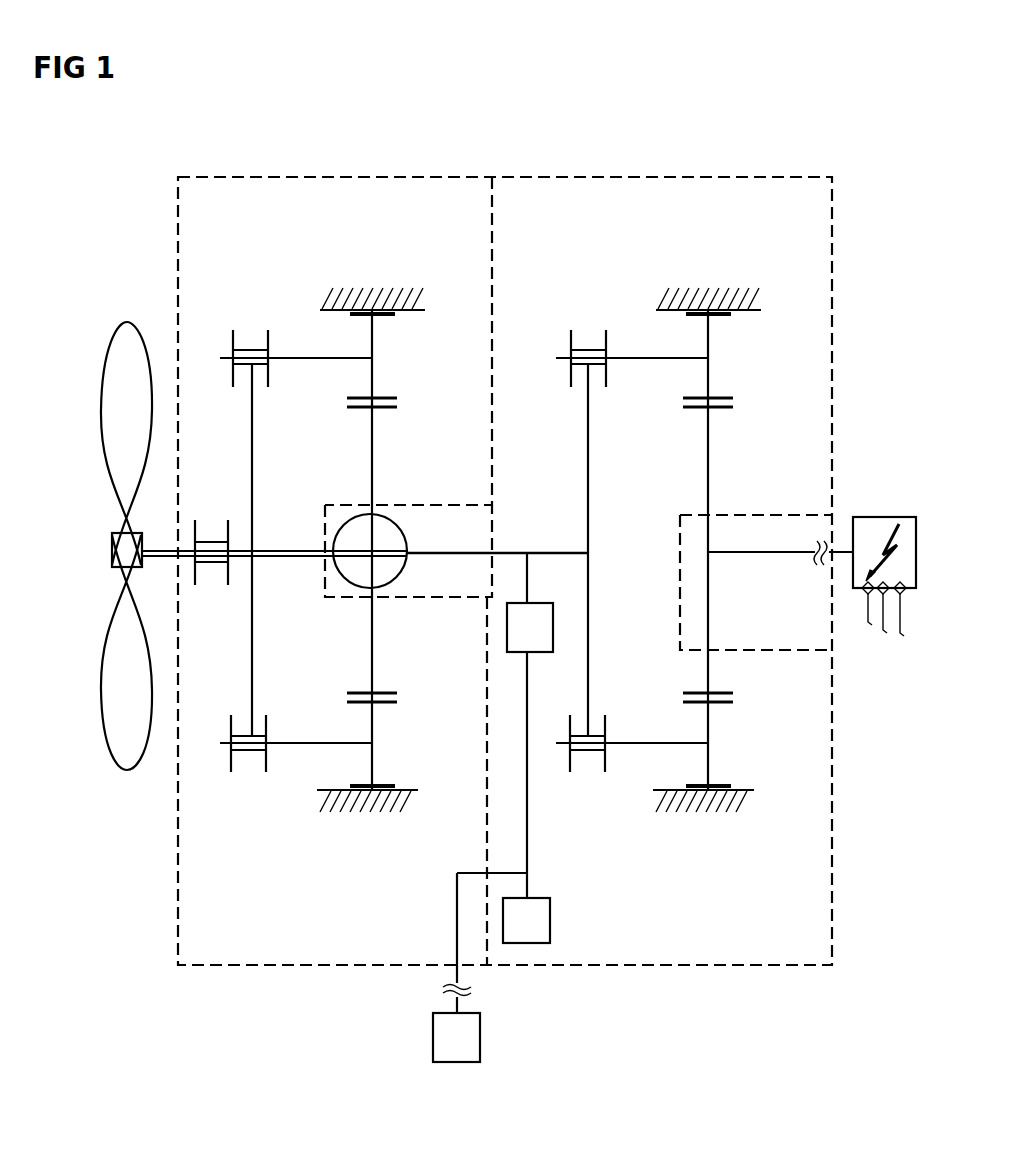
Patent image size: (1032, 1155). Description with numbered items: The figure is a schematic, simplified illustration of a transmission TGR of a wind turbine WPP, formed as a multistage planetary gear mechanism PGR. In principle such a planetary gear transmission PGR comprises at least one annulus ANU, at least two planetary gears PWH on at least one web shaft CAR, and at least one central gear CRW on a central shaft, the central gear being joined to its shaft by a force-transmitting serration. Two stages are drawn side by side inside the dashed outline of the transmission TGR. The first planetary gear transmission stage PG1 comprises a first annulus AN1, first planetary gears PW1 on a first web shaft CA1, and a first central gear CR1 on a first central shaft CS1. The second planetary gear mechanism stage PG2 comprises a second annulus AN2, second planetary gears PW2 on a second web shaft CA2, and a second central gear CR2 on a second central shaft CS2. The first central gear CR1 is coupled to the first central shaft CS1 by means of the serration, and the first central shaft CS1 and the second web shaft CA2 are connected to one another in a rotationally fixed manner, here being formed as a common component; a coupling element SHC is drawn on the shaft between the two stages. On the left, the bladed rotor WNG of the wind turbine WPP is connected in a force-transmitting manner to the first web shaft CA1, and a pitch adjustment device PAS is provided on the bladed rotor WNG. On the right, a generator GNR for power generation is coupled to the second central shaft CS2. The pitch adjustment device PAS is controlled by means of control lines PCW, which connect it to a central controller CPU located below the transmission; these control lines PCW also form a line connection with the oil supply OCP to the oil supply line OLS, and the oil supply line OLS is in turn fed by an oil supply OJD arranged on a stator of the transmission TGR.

The transmission TGR is at (794, 137).
The planetary gear transmission PGR is at (525, 311).
The first planetary gear transmission stage PG1 is at (298, 190).
The second planetary gear mechanism stage PG2 is at (643, 190).
The annulus ANU is at (547, 506).
The first annulus AN1 is at (372, 290).
The second annulus AN2 is at (718, 290).
The planetary gears PWH is at (583, 550).
The first planetary gears PW1 is at (375, 336).
The second planetary gears PW2 is at (752, 726).
The web shaft CAR is at (464, 551).
The first web shaft CA1 is at (255, 440).
The second web shaft CA2 is at (591, 440).
The central gear CRW is at (581, 550).
The first central gear CR1 is at (375, 440).
The second central gear CR2 is at (711, 440).
The shaft coupling SHC is at (352, 590).
The wind turbine WPP is at (102, 503).
The bladed rotor WNG is at (126, 335).
The pitch adjustment device PAS is at (110, 552).
The control lines PCW is at (474, 788).
The first central shaft CS1 is at (552, 548).
The second central shaft CS2 is at (785, 560).
The generator GNR is at (883, 517).
The oil supply OCP is at (505, 630).
The oil supply line OLS is at (552, 922).
The oil supply OJD is at (566, 832).
The central controller CPU is at (482, 1040).